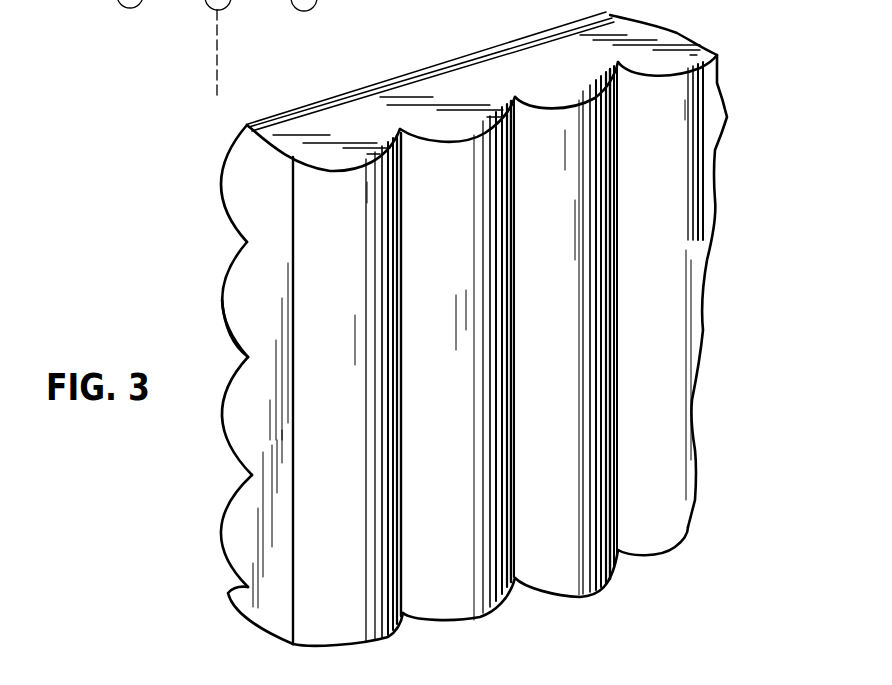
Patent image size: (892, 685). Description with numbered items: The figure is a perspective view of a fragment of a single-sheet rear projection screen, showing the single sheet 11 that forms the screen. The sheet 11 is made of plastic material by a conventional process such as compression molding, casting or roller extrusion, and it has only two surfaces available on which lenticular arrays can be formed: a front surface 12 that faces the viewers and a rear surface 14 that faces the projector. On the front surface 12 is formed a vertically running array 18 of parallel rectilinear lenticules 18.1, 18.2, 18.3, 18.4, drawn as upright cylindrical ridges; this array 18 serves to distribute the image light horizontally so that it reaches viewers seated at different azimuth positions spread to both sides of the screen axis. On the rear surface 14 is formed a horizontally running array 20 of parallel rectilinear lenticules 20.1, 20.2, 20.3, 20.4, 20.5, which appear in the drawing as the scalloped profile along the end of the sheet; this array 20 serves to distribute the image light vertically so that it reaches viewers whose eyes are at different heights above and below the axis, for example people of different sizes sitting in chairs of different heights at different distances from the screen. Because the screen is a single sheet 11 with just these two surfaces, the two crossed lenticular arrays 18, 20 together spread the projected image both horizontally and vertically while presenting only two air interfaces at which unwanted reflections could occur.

The single sheet 11 is at (441, 101).
The front surface 12 is at (548, 132).
The rear surface 14 is at (222, 268).
The vertically running array 18 is at (527, 352).
The lenticule 18.1 is at (383, 632).
The lenticule 18.2 is at (486, 604).
The lenticule 18.3 is at (590, 583).
The lenticule 18.4 is at (670, 538).
The horizontally running array 20 is at (200, 384).
The lenticule 20.1 is at (222, 196).
The lenticule 20.2 is at (228, 325).
The lenticule 20.3 is at (222, 427).
The lenticule 20.4 is at (223, 525).
The lenticule 20.5 is at (250, 588).